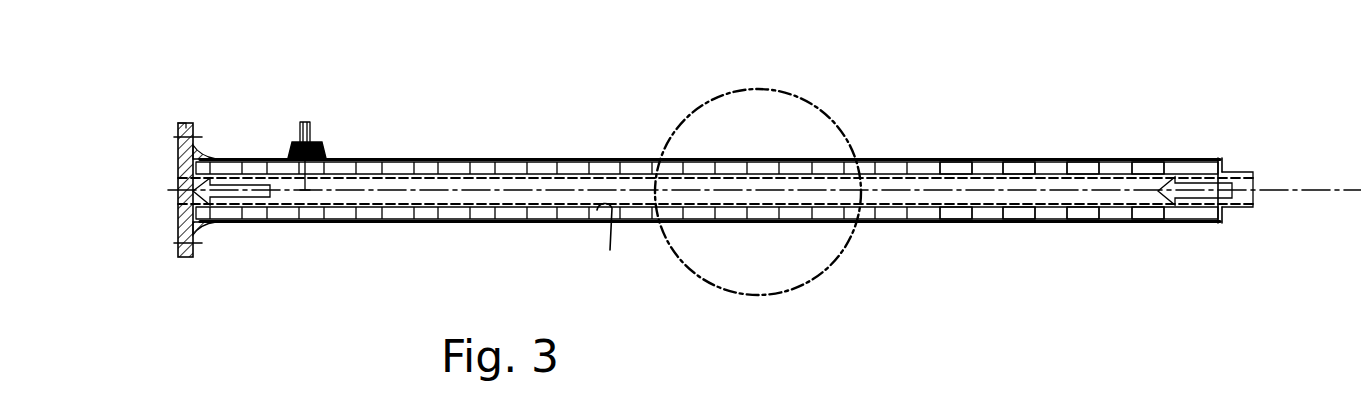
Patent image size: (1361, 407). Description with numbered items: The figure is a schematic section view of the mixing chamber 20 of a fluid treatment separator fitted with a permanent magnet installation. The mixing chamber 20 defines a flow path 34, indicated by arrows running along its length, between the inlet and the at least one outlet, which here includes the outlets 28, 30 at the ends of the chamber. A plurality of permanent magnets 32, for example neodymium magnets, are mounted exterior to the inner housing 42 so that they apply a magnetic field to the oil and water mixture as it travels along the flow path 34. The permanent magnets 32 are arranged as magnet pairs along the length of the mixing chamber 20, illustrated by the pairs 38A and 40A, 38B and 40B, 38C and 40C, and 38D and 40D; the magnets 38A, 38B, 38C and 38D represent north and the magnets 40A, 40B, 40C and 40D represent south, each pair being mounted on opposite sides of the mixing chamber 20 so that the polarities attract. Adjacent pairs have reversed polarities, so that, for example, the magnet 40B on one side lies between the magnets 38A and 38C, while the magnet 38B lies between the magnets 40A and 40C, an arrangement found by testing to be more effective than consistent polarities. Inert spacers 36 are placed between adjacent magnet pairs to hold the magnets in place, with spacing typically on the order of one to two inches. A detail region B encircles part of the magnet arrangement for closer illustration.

The mixing chamber 20 is at (923, 157).
The outlet 28 is at (322, 149).
The outlet 30 is at (180, 195).
The permanent magnets 32 is at (443, 158).
The flow path 34 is at (241, 190).
The inert spacers 36 is at (424, 212).
The magnet 38A is at (958, 163).
The magnet 38B is at (1017, 218).
The magnet 38C is at (1087, 163).
The magnet 38D is at (1137, 218).
The magnet 40A is at (945, 222).
The magnet 40B is at (1022, 163).
The magnet 40C is at (1073, 218).
The magnet 40D is at (1153, 163).
The inner housing 42 is at (605, 244).
The detail circle B is at (758, 87).